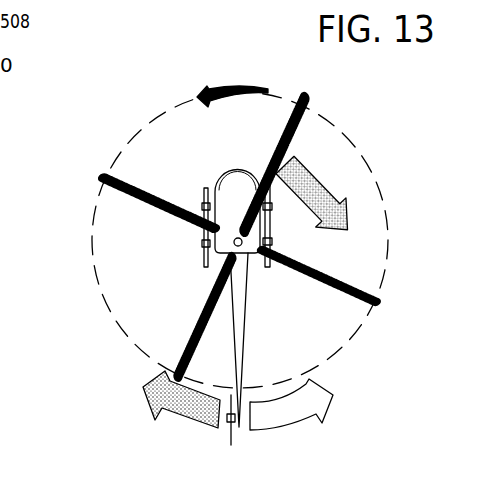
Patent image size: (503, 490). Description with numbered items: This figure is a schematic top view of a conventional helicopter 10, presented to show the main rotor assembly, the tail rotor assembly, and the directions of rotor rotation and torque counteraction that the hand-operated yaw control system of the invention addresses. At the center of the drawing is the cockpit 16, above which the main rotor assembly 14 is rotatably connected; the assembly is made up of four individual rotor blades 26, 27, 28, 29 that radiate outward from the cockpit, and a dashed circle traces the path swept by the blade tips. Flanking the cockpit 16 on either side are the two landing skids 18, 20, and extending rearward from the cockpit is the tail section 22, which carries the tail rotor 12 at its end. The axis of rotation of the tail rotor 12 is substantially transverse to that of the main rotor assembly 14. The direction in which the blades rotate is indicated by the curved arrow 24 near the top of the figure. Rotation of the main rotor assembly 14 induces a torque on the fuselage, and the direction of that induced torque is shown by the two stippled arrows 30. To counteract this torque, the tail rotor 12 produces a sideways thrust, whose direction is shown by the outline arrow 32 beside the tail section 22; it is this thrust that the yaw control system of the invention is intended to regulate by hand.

The helicopter 10 is at (194, 264).
The tail rotor 12 is at (235, 428).
The main rotor assembly 14 is at (123, 200).
The cockpit 16 is at (237, 170).
The landing skid 18 is at (204, 190).
The landing skid 20 is at (274, 199).
The tail section 22 is at (249, 333).
The arrow 24 is at (238, 87).
The rotor blade 26 is at (149, 203).
The rotor blade 27 is at (200, 325).
The rotor blade 28 is at (350, 285).
The rotor blade 29 is at (290, 128).
The arrows 30 is at (322, 182).
The arrow 32 is at (287, 421).